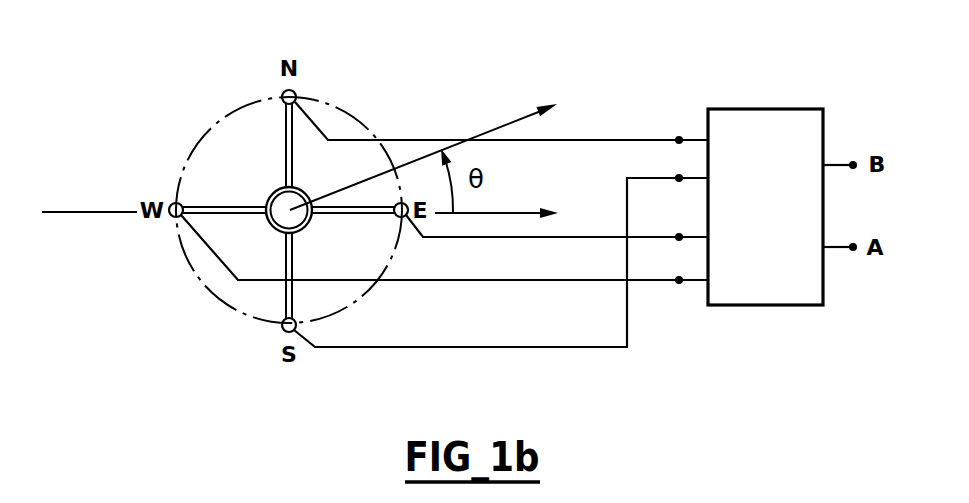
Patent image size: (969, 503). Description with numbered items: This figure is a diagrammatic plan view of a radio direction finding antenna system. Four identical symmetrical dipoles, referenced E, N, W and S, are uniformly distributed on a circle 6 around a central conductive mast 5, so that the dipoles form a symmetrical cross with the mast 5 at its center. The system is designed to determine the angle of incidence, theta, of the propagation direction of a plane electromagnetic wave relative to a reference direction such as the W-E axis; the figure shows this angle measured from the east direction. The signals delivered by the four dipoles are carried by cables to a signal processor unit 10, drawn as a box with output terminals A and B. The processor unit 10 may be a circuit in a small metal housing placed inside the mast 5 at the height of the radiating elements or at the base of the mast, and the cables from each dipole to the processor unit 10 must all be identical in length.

The central conductive mast 5 is at (270, 228).
The circle 6 is at (352, 112).
The signal processor unit 10 is at (759, 109).